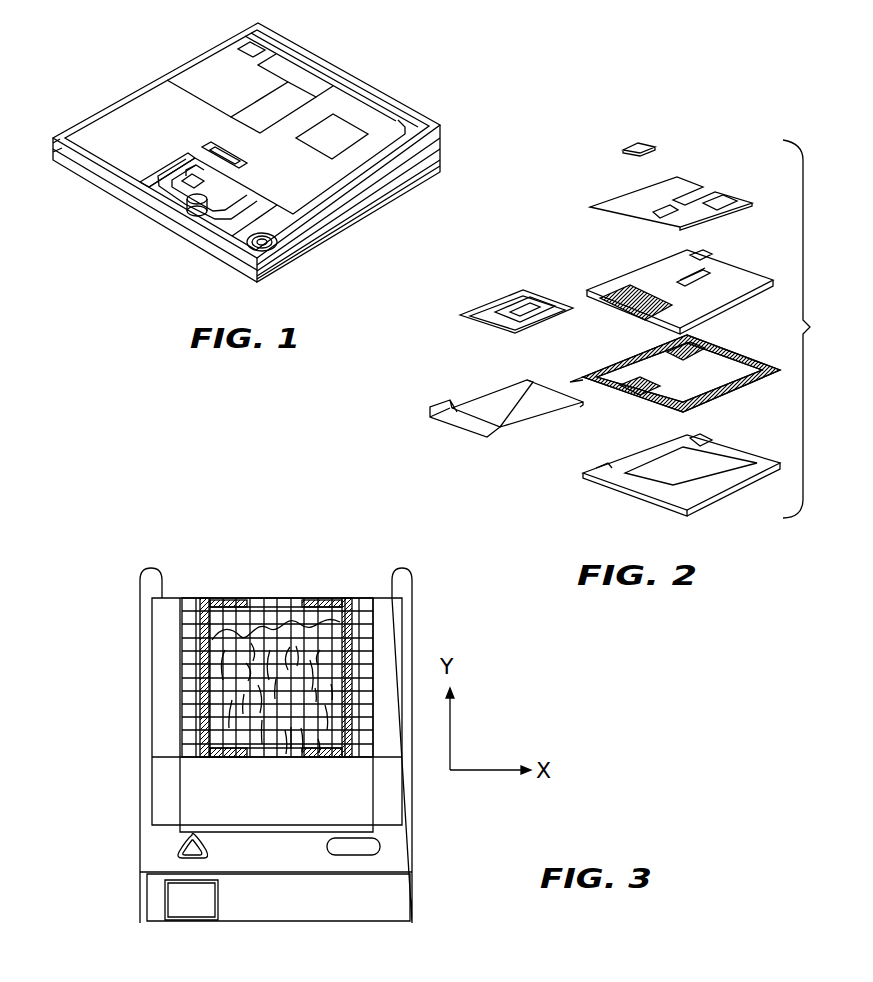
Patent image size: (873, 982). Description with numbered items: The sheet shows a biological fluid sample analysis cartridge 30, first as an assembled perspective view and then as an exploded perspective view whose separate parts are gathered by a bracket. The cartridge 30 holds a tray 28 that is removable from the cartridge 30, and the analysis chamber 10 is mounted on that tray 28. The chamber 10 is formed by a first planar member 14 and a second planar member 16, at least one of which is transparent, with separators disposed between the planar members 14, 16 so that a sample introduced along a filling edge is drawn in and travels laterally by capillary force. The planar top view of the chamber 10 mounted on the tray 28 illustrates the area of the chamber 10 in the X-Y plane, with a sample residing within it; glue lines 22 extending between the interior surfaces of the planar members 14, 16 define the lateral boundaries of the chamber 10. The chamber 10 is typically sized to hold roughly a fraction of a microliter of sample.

In FIG. 1, the analysis chamber 10 is at (262, 107).
In FIG. 2, the analysis chamber 10 is at (510, 280).
In FIG. 3, the analysis chamber 10 is at (295, 578).
In FIG. 2, the first planar member 14 is at (525, 295).
In FIG. 3, the first planar member 14 is at (355, 805).
In FIG. 2, the second planar member 16 is at (490, 323).
In FIG. 3, the second planar member 16 is at (390, 817).
In FIG. 3, the glue lines 22 is at (182, 712).
In FIG. 1, the tray 28 is at (126, 240).
In FIG. 2, the tray 28 is at (500, 445).
In FIG. 3, the tray 28 is at (98, 845).
In FIG. 1, the cartridge 30 is at (113, 58).
In FIG. 2, the cartridge 30 is at (702, 329).